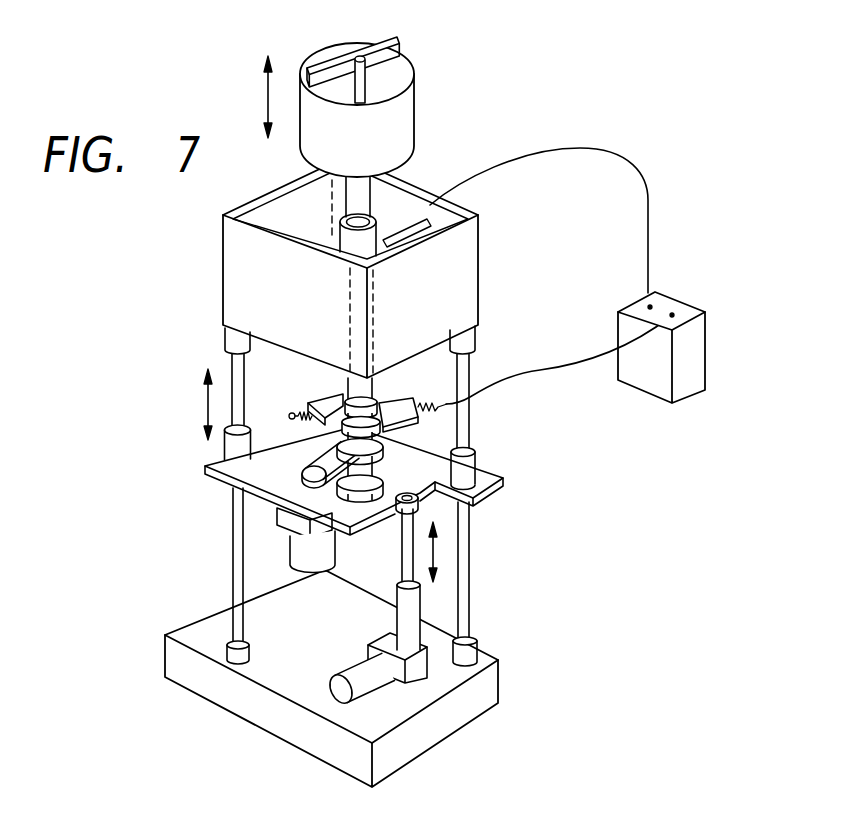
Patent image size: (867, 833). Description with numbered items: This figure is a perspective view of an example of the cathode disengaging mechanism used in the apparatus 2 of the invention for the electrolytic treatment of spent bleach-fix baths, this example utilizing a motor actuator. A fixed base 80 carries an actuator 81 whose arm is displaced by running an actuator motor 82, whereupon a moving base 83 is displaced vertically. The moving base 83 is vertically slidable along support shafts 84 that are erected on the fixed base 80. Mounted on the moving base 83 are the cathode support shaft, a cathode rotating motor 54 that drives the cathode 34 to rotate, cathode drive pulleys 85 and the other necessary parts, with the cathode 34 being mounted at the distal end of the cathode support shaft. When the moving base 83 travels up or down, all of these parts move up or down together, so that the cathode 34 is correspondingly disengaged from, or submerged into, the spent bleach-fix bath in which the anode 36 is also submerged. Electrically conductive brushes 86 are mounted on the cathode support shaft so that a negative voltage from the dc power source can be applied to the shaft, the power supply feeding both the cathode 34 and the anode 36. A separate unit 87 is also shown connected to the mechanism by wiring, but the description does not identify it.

The electrolytic treatment apparatus 2 is at (478, 252).
The cathode 34 is at (414, 92).
The anode 36 is at (380, 229).
The cathode rotating motor 54 is at (297, 548).
The fixed base 80 is at (483, 703).
The actuator 81 is at (420, 604).
The actuator motor 82 is at (373, 682).
The moving base 83 is at (505, 486).
The support shafts 84 is at (233, 580).
The cathode drive pulleys 85 is at (312, 462).
The electrically conductive brushes 86 is at (412, 397).
The control unit 87 is at (686, 304).